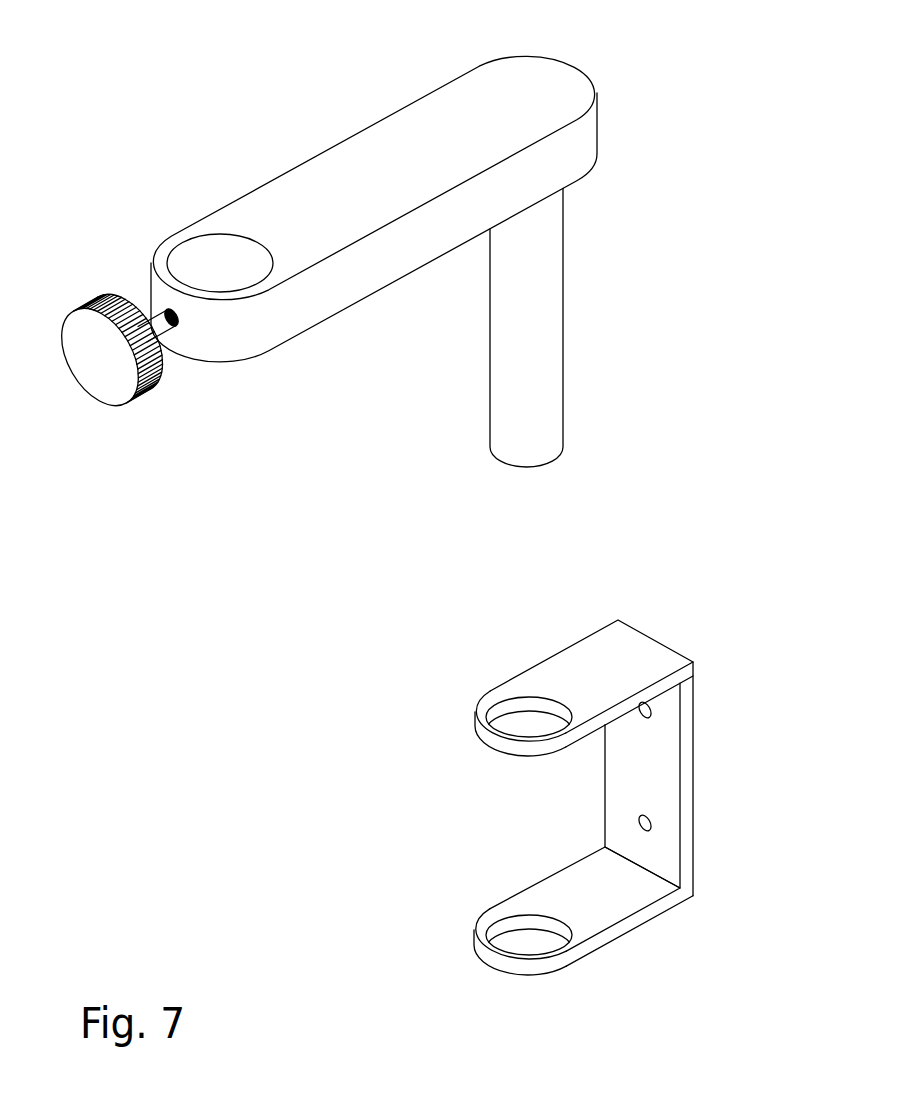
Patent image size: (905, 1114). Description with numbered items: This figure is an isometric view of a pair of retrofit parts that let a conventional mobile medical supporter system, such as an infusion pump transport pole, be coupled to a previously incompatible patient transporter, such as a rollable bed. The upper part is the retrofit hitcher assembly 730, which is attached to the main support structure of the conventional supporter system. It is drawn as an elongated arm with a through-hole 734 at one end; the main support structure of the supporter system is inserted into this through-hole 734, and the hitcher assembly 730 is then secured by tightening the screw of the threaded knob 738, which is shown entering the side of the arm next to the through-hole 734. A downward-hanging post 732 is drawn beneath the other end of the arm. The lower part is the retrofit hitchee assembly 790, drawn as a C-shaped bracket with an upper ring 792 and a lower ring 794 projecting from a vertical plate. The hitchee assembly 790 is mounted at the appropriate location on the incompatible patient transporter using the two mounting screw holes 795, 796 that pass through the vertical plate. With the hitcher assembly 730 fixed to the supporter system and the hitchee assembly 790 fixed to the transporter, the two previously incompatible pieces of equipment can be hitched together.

The retrofit hitcher assembly 730 is at (280, 120).
The post 732 is at (562, 318).
The through-hole 734 is at (230, 233).
The threaded knob 738 is at (122, 400).
The retrofit hitchee assembly 790 is at (425, 828).
The upper ring 792 is at (543, 685).
The lower ring 794 is at (537, 908).
The mounting screw hole 795 is at (648, 716).
The mounting screw hole 796 is at (650, 830).